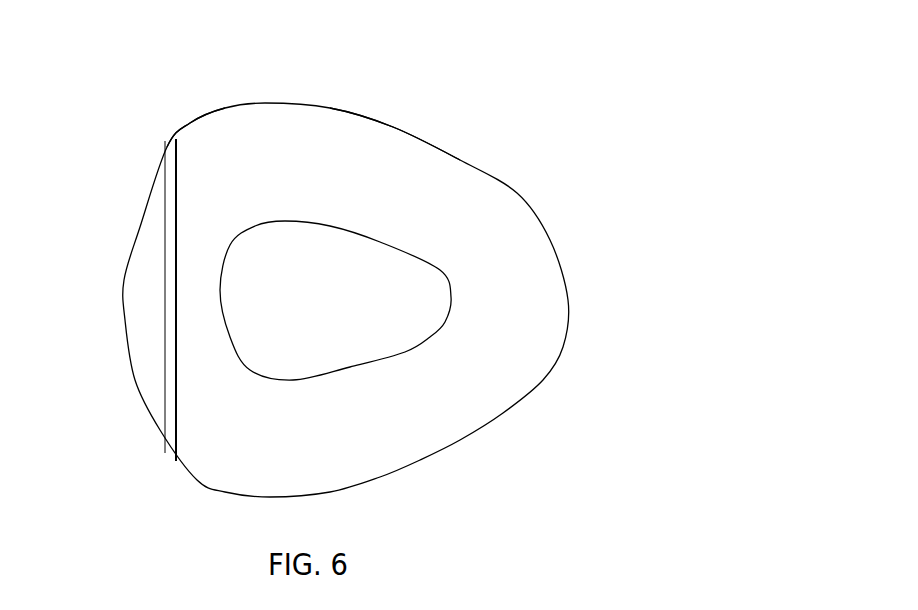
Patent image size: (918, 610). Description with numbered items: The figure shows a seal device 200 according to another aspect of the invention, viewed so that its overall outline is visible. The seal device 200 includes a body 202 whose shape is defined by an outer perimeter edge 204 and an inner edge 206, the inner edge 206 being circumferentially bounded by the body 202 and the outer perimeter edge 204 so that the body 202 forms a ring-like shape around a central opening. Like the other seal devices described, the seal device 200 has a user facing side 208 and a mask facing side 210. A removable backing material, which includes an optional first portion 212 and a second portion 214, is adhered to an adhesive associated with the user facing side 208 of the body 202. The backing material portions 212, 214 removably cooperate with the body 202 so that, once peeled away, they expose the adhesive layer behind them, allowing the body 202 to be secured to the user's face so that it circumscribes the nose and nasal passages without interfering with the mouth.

The seal device 200 is at (543, 85).
The body 202 is at (505, 207).
The perimeter edge 204 is at (393, 127).
The edge 206 is at (328, 225).
The user facing side 208 is at (234, 195).
The mask facing side 210 is at (198, 113).
The first portion 212 is at (147, 278).
The second portion 214 is at (337, 453).